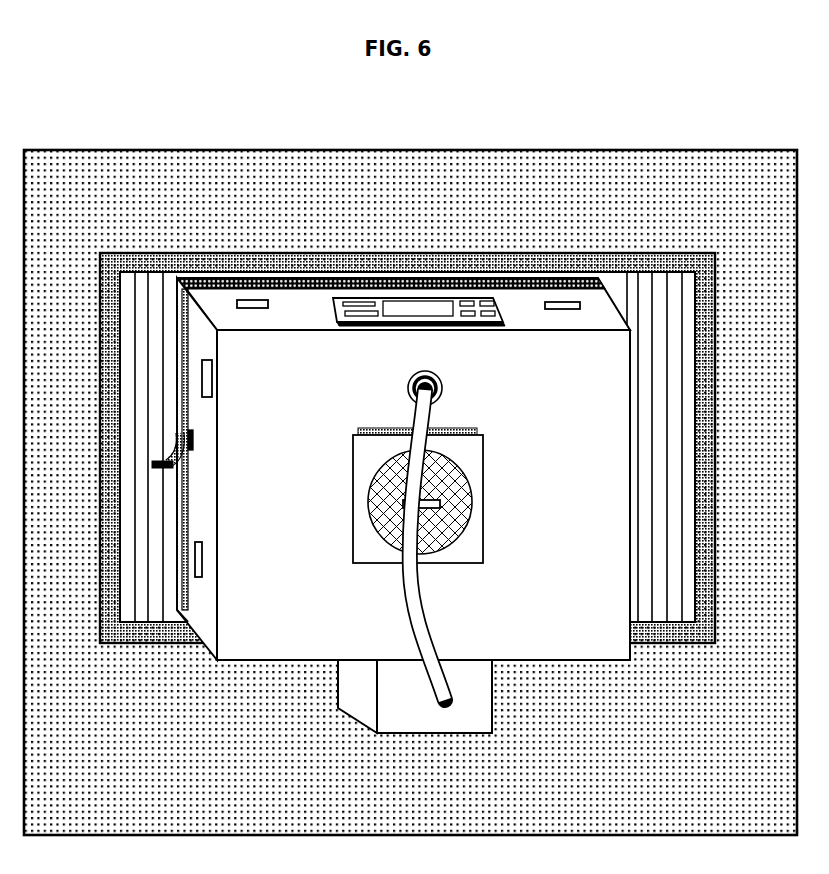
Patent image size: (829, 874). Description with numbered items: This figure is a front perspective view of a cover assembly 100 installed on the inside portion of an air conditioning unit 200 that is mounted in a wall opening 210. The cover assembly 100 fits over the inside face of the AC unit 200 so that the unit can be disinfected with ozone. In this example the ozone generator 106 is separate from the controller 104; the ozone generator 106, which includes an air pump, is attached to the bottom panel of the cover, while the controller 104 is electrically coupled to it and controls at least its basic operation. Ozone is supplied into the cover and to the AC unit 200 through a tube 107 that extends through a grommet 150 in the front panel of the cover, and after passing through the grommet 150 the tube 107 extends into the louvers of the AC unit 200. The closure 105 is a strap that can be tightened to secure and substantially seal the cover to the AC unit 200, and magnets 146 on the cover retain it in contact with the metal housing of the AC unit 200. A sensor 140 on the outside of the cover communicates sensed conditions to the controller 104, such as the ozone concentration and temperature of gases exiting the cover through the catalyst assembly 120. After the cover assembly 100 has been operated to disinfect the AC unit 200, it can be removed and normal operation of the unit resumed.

The cover assembly 100 is at (214, 300).
The controller 104 is at (427, 305).
The closure 105 is at (188, 488).
The ozone generator 106 is at (477, 698).
The tube 107 is at (425, 620).
The catalyst assembly 120 is at (473, 432).
The sensor 140 is at (440, 505).
The magnets 146 is at (240, 298).
The grommet 150 is at (442, 388).
The air conditioning unit 200 is at (348, 275).
The wall opening 210 is at (687, 262).